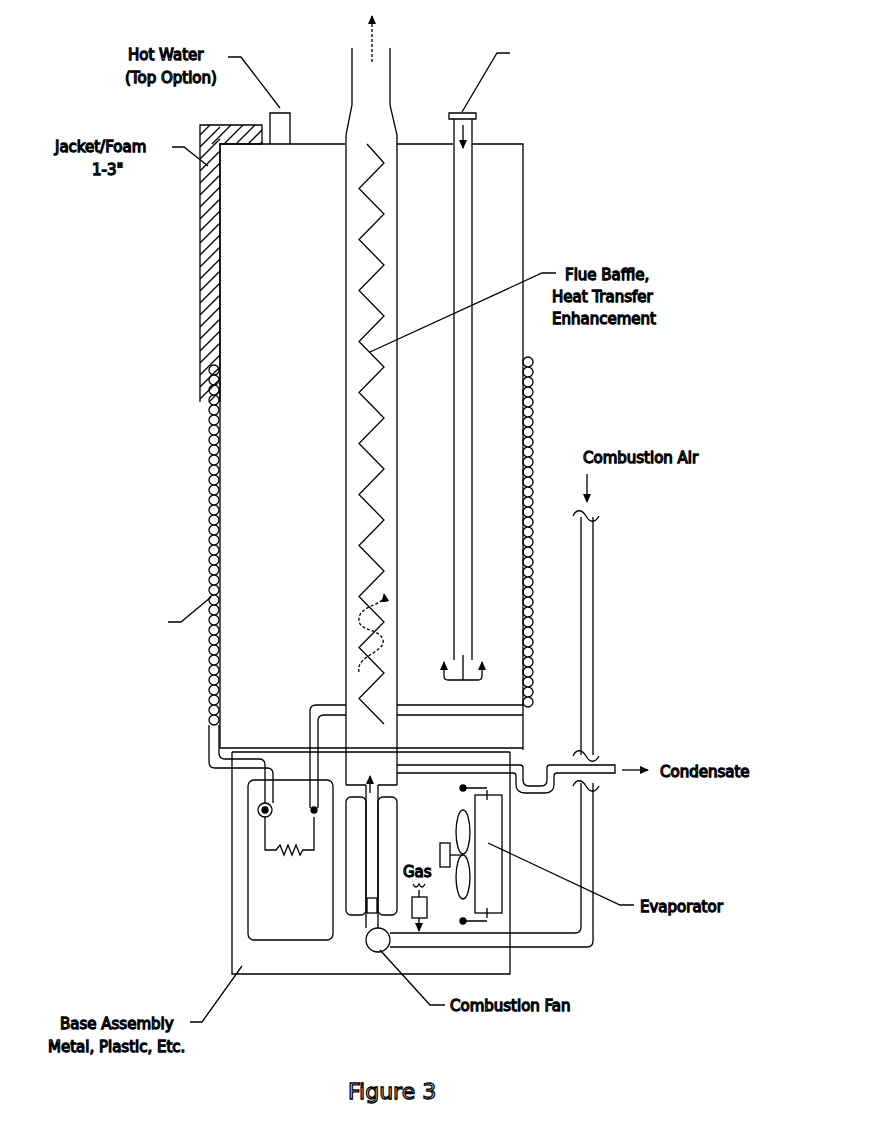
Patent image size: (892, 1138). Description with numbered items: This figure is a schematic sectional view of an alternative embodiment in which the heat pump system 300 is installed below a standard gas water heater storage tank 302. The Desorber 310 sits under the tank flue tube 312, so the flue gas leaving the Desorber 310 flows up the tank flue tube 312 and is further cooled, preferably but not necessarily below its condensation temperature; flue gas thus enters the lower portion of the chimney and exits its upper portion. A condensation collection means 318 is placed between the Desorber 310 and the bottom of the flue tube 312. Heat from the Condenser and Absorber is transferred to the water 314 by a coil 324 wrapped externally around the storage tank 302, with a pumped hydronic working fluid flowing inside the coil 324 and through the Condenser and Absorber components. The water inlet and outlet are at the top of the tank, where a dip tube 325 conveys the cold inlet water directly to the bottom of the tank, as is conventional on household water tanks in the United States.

The heat pump system 300 is at (275, 888).
The storage tank 302 is at (500, 198).
The Desorber 310 is at (352, 906).
The tank flue tube 312 is at (346, 233).
The water 314 is at (291, 525).
The condensation collection means 318 is at (398, 763).
The coil 324 is at (213, 565).
The dip tube 325 is at (479, 132).